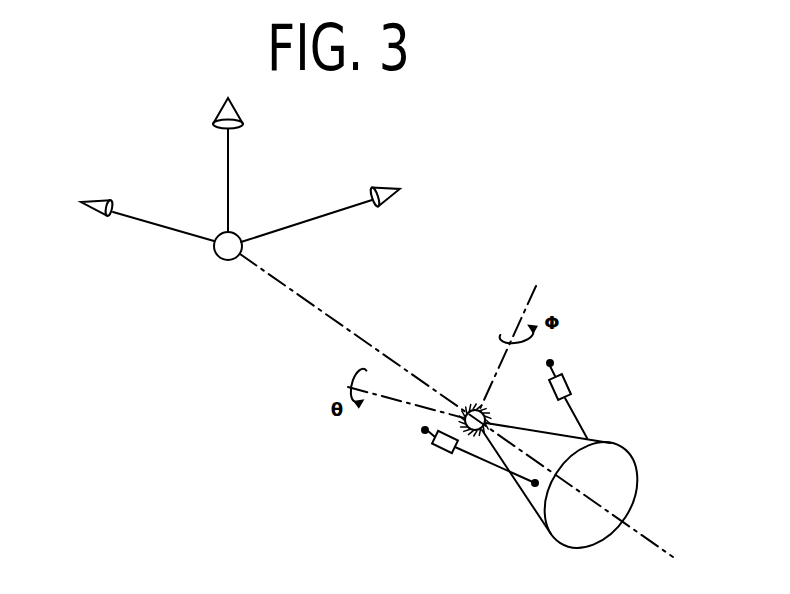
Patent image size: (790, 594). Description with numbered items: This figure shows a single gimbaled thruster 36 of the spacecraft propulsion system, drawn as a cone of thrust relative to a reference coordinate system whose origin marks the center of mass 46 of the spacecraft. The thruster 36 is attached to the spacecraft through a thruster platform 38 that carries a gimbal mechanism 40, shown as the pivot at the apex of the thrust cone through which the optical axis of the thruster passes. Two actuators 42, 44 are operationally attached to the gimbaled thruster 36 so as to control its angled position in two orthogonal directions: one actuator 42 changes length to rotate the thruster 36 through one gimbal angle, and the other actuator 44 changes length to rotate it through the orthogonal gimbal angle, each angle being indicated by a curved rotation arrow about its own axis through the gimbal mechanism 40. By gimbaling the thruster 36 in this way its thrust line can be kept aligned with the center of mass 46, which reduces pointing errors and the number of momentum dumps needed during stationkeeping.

The gimbaled thruster 36 is at (617, 444).
The thruster platform 38 is at (431, 295).
The gimbal mechanism 40 is at (478, 397).
The actuator 42 is at (440, 451).
The actuator 44 is at (572, 383).
The center of mass 46 is at (222, 259).